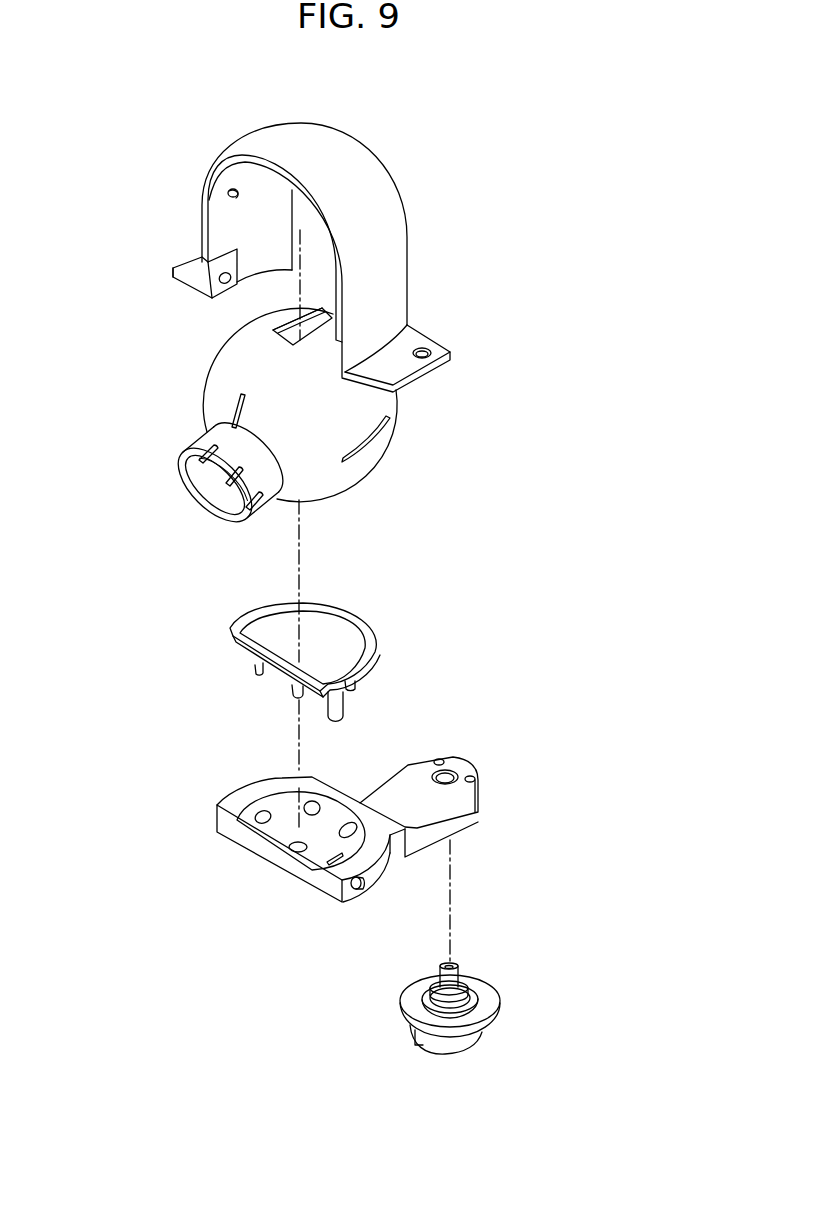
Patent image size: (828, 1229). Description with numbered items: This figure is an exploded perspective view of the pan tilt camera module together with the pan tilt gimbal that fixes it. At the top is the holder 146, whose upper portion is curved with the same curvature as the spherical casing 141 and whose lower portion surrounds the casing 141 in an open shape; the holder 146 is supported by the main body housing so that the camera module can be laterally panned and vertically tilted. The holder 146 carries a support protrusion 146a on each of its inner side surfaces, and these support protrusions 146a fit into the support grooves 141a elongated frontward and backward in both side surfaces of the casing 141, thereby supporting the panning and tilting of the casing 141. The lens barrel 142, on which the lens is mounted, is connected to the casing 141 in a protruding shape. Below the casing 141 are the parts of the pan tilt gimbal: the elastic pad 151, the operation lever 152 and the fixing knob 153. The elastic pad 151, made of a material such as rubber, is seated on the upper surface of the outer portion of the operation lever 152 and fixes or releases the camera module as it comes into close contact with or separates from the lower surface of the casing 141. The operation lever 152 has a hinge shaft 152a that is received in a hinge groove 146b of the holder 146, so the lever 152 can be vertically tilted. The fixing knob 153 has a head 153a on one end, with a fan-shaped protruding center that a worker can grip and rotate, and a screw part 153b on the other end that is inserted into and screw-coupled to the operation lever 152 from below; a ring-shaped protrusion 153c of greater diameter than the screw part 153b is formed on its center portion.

The holder 146 is at (393, 272).
The support protrusion 146a is at (229, 195).
The hinge groove 146b is at (205, 297).
The casing 141 is at (237, 370).
The support groove 141a is at (367, 450).
The lens barrel 142 is at (203, 447).
The elastic pad 151 is at (356, 632).
The operation lever 152 is at (407, 778).
The hinge shaft 152a is at (355, 890).
The fixing knob 153 is at (531, 984).
The head 153a is at (462, 1028).
The screw part 153b is at (462, 972).
The ring-shaped protrusion 153c is at (452, 978).